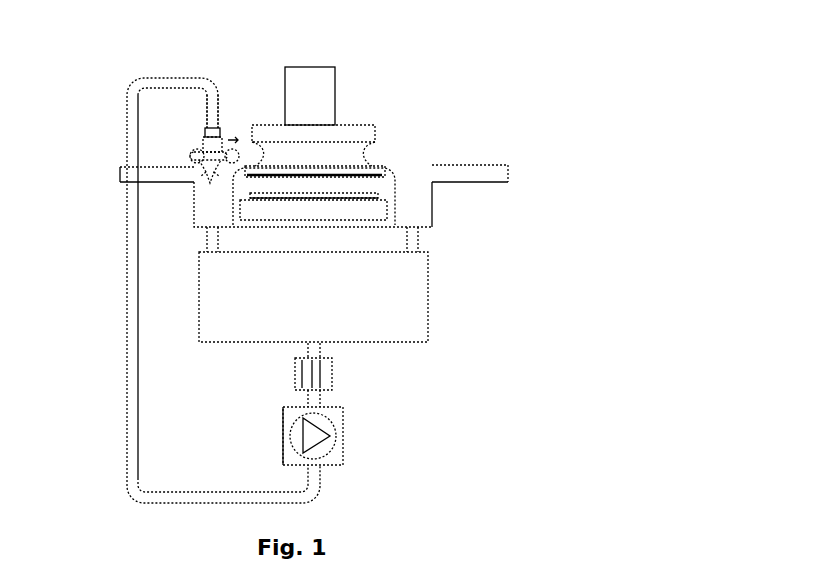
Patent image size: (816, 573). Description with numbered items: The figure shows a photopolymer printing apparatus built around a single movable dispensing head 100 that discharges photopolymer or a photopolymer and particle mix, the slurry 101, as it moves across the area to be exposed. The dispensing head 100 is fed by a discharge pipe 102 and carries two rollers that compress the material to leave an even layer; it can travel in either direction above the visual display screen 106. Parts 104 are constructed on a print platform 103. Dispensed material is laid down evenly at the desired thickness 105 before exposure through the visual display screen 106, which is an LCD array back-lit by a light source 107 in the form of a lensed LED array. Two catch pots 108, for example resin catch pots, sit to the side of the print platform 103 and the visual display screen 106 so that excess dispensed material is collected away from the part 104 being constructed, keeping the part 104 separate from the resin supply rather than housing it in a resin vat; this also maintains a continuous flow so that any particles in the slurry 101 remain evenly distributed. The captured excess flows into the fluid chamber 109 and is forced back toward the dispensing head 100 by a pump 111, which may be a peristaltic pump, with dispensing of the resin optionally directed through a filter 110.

The movable dispensing head 100 is at (200, 142).
The photopolymer or photopolymer and particle mix (slurry) 101 is at (210, 183).
The discharge pipe 102 is at (130, 260).
The print platform 103 is at (323, 135).
The parts 104 is at (348, 150).
The desired thickness 105 is at (368, 168).
The visual display screen 106 is at (368, 190).
The light source 107 is at (375, 207).
The catch pots 108 is at (415, 223).
The fluid chamber 109 is at (423, 278).
The filter 110 is at (323, 375).
The pump 111 is at (317, 434).